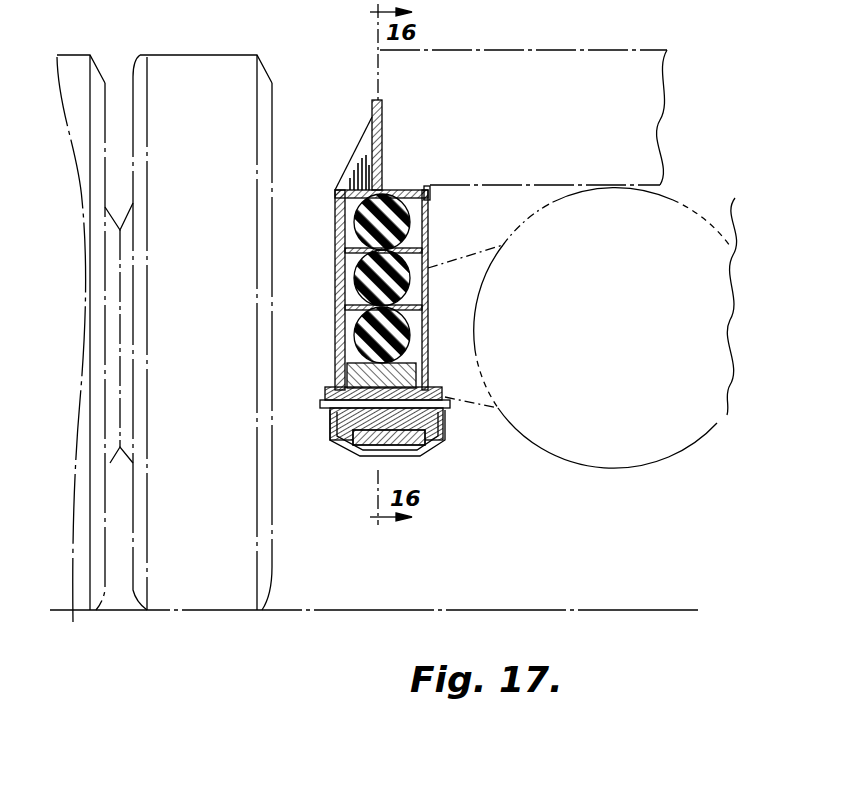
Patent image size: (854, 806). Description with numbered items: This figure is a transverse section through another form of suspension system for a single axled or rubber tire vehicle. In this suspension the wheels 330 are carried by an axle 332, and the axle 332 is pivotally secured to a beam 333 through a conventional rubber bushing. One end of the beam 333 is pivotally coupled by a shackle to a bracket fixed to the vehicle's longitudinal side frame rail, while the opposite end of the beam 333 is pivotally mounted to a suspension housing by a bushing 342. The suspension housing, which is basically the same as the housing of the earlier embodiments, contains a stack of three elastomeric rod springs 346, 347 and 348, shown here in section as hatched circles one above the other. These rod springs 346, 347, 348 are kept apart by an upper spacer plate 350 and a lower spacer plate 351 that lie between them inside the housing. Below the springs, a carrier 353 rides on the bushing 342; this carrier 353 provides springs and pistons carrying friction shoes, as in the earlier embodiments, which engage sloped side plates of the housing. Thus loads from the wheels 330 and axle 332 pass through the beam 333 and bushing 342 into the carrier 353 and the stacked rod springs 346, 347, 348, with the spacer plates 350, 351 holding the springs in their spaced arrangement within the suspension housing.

The wheels 330 is at (190, 68).
The axle 332 is at (336, 280).
The beam 333 is at (335, 420).
The bushing 342 is at (425, 445).
The elastomeric rod spring 346 is at (368, 219).
The elastomeric rod spring 347 is at (392, 293).
The elastomeric rod spring 348 is at (398, 350).
The upper spacer plate 350 is at (416, 243).
The lower spacer plate 351 is at (421, 324).
The carrier 353 is at (346, 383).